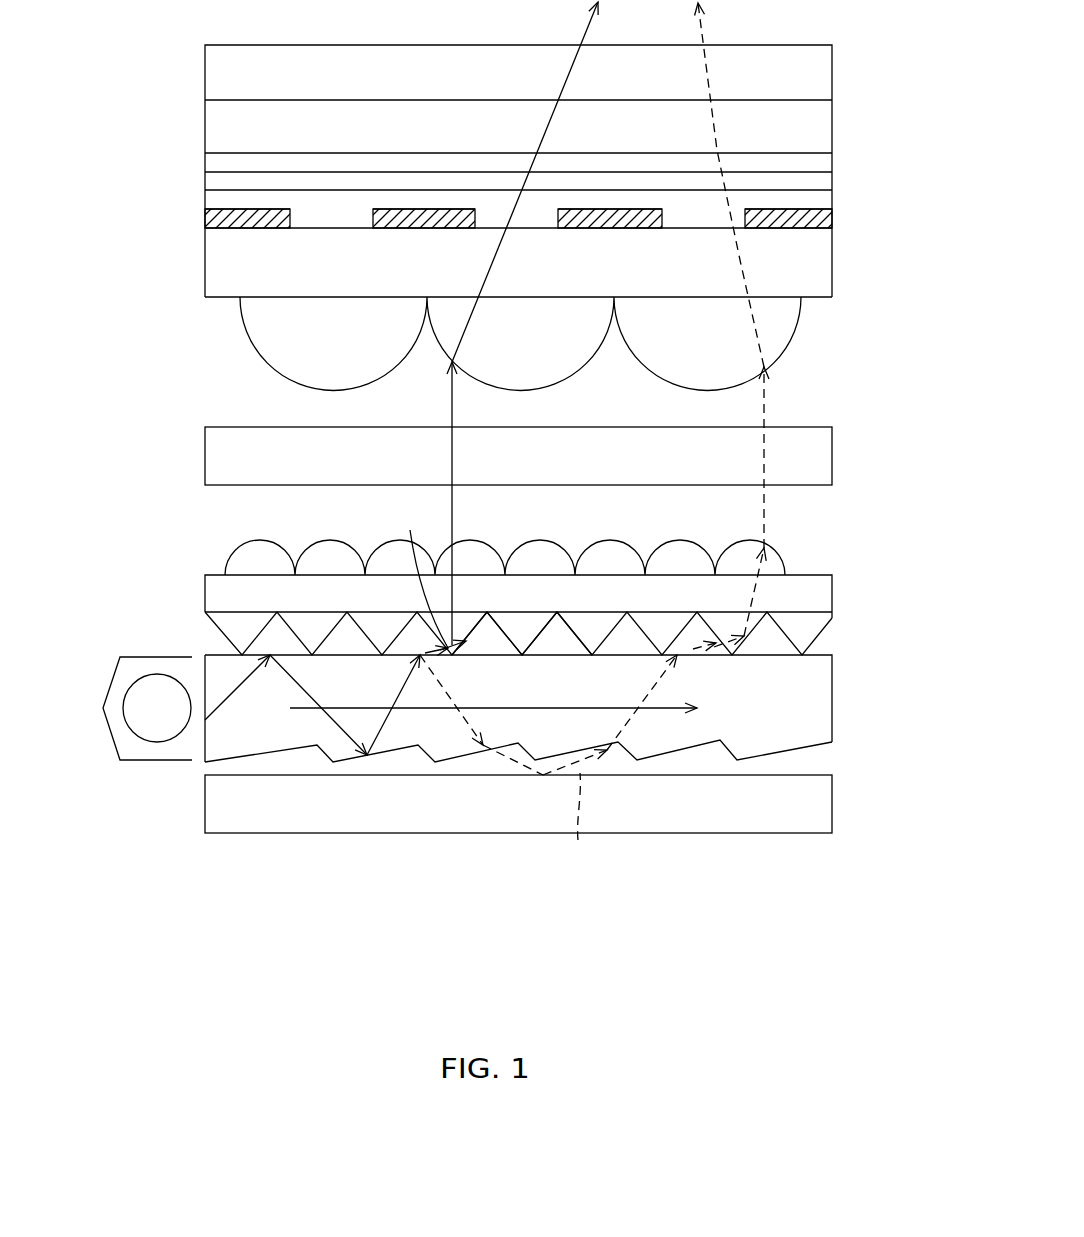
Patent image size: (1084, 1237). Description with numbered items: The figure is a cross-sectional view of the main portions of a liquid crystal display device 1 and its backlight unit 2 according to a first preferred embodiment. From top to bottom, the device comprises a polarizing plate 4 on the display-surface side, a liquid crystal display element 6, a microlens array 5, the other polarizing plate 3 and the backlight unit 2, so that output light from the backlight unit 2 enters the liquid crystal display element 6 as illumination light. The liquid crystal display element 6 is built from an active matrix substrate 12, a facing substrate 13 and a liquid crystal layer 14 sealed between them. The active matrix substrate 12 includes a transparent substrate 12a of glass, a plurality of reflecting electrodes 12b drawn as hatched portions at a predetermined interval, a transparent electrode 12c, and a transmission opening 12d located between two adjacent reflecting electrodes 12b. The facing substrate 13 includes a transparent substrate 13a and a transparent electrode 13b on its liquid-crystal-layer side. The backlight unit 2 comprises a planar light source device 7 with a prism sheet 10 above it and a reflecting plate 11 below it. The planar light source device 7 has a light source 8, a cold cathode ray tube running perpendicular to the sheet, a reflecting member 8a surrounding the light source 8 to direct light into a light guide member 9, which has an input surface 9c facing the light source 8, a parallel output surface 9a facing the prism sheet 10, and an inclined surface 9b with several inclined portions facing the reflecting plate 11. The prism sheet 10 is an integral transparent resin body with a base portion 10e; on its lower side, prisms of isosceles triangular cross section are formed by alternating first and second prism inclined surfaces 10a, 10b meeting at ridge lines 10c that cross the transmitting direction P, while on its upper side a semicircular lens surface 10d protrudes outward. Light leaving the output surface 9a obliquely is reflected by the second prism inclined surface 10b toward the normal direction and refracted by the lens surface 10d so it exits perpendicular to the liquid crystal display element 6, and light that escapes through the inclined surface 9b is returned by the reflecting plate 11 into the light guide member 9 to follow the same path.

The liquid crystal display device 1 is at (853, 380).
The backlight unit 2 is at (907, 533).
The polarizing plate 3 is at (820, 452).
The polarizing plate 4 is at (215, 68).
The microlens array 5 is at (795, 330).
The liquid crystal display element 6 is at (70, 118).
The planar light source device 7 is at (124, 642).
The light source 8 is at (155, 723).
The reflecting member 8a is at (106, 733).
The light guide member 9 is at (818, 700).
The output surface 9a is at (818, 640).
The inclined surface 9b is at (686, 750).
The input surface 9c is at (207, 735).
The prism sheet 10 is at (818, 596).
The first prism inclined surface 10a is at (497, 642).
The second prism inclined surface 10b is at (546, 642).
The ridge line 10c is at (520, 653).
The lens surface 10d is at (614, 544).
The base portion 10e is at (226, 597).
The reflecting plate 11 is at (818, 805).
The active matrix substrate 12 is at (117, 303).
The transparent substrate 12a is at (235, 272).
The reflecting electrodes 12b is at (317, 216).
The transparent electrode 12c is at (220, 198).
The transmission opening 12d is at (220, 246).
The facing substrate 13 is at (117, 108).
The transparent substrate 13a is at (220, 127).
The transparent electrode 13b is at (220, 165).
The liquid crystal layer 14 is at (220, 182).